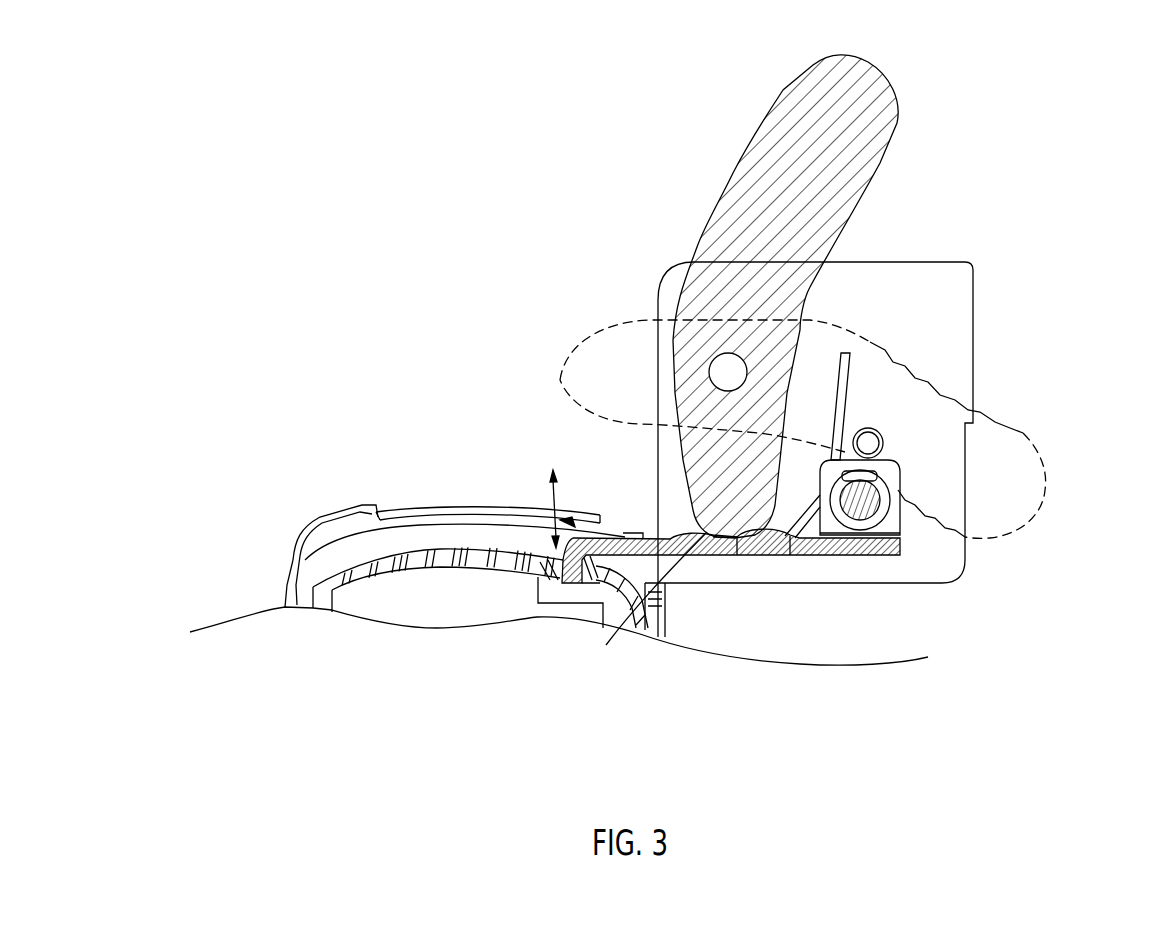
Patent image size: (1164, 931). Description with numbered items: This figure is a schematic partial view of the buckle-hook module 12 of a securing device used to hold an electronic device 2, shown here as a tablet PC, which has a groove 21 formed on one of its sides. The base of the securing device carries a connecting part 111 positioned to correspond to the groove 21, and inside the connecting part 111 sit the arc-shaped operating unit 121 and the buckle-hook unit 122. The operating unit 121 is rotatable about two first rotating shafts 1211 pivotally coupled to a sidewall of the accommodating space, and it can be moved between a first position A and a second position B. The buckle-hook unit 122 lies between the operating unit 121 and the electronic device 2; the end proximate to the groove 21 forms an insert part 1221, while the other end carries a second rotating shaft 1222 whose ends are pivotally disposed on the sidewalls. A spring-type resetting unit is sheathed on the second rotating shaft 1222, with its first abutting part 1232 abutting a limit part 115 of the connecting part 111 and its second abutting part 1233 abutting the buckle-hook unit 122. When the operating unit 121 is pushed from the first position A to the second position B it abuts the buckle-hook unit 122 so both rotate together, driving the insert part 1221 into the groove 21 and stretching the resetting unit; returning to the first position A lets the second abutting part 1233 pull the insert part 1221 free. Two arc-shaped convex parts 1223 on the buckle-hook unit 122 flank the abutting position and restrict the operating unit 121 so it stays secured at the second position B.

The electronic device 2 is at (300, 497).
The groove 21 is at (565, 546).
The buckle-hook module 12 is at (903, 298).
The connecting part 111 is at (958, 320).
The limit part 115 is at (868, 443).
The operating unit 121 is at (897, 122).
The first rotating shaft 1211 is at (722, 367).
The buckle-hook unit 122 is at (622, 537).
The insert part 1221 is at (525, 552).
The second rotating shaft 1222 is at (880, 500).
The convex part 1223 is at (833, 555).
The first abutting part 1232 is at (847, 375).
The second abutting part 1233 is at (773, 557).
The first position A is at (617, 362).
The second position B is at (722, 528).